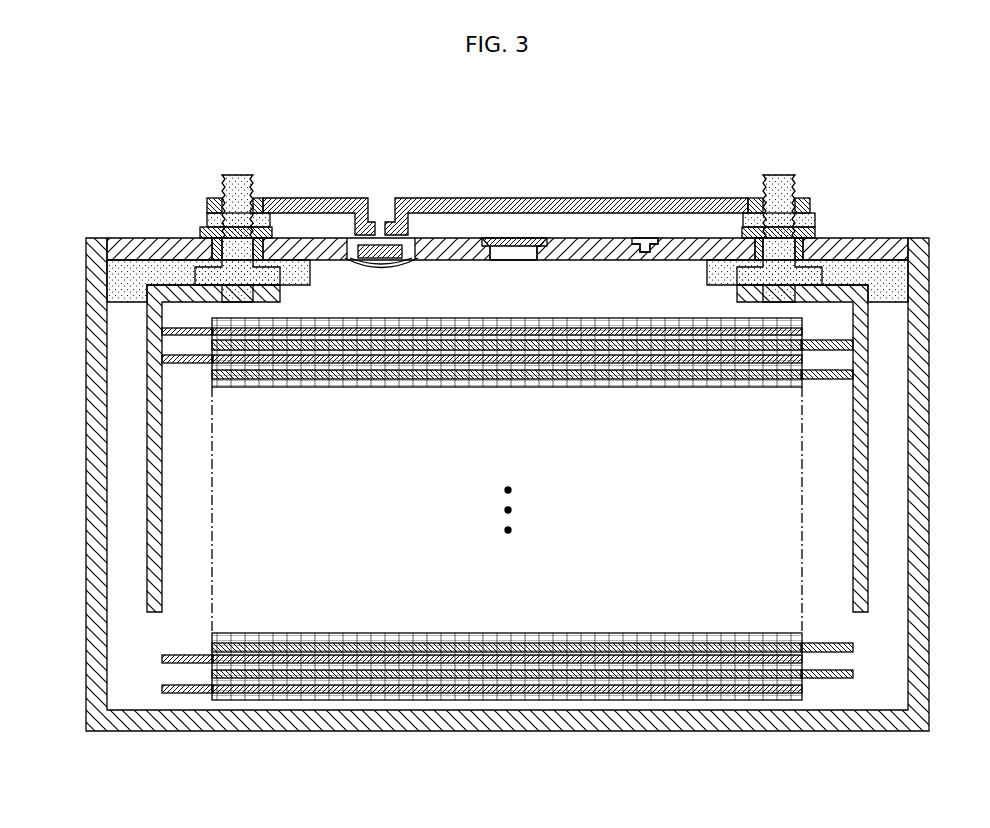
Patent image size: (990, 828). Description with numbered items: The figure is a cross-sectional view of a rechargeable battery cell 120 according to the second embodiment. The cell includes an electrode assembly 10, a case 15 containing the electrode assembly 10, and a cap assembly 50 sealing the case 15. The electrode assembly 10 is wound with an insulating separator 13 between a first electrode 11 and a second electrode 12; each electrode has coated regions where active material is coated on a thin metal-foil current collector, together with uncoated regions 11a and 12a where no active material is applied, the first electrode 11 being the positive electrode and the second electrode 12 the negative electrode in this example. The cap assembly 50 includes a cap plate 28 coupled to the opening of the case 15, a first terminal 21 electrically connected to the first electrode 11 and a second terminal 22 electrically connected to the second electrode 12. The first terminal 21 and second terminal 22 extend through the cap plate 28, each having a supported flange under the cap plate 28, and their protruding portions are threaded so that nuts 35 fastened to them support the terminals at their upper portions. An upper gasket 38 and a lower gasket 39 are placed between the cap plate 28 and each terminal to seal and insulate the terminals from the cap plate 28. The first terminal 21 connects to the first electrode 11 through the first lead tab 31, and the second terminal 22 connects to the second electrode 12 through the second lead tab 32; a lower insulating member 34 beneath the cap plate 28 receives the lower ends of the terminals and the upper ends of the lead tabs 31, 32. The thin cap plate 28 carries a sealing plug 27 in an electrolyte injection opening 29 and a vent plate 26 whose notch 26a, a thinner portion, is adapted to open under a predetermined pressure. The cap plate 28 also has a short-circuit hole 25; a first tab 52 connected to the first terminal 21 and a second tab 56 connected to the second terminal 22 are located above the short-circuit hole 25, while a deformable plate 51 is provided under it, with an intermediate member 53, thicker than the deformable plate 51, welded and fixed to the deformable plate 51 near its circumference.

The electrode assembly 10 is at (506, 553).
The first electrode 11 is at (303, 693).
The uncoated region 11a is at (178, 693).
The second electrode 12 is at (703, 678).
The uncoated region 12a is at (838, 682).
The insulating separator 13 is at (513, 668).
The case 15 is at (918, 432).
The first terminal 21 is at (237, 175).
The second terminal 22 is at (778, 175).
The short-circuit hole 25 is at (566, 186).
The vent plate 26 is at (545, 247).
The notch 26a is at (513, 240).
The sealing plug 27 is at (507, 204).
The cap plate 28 is at (880, 244).
The electrolyte injection opening 29 is at (650, 243).
The first lead tab 31 is at (147, 454).
The second lead tab 32 is at (860, 545).
The lower insulating member 34 is at (118, 283).
The nut 35 is at (210, 200).
The upper gasket 38 is at (273, 231).
The lower gasket 39 is at (215, 247).
The cap assembly 50 is at (505, 212).
The deformable plate 51 is at (384, 269).
The first tab 52 is at (326, 198).
The intermediate member 53 is at (382, 245).
The second tab 56 is at (458, 198).
The rechargeable battery cell 120 is at (722, 118).